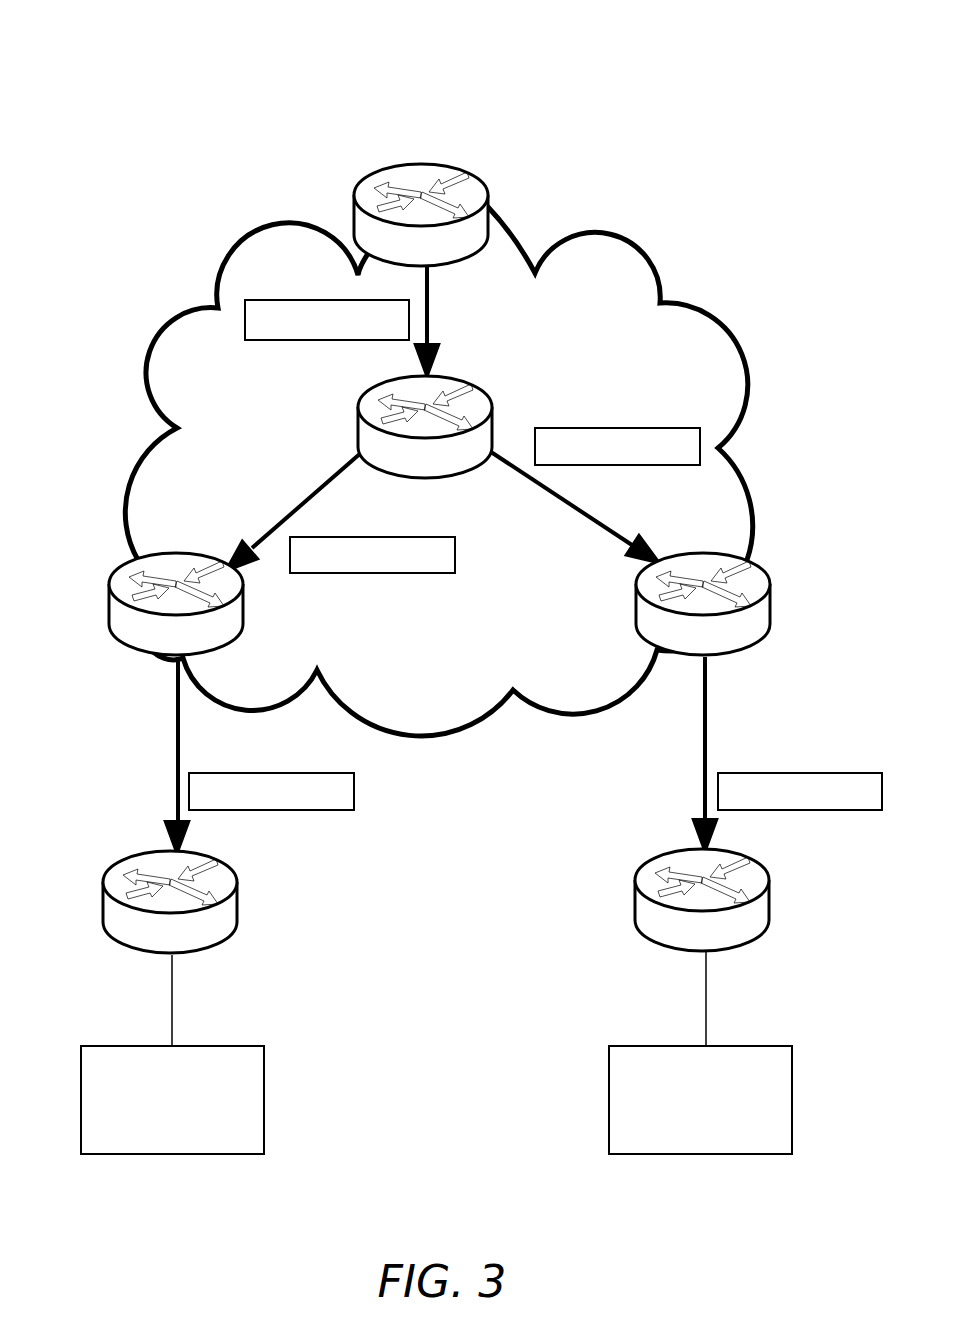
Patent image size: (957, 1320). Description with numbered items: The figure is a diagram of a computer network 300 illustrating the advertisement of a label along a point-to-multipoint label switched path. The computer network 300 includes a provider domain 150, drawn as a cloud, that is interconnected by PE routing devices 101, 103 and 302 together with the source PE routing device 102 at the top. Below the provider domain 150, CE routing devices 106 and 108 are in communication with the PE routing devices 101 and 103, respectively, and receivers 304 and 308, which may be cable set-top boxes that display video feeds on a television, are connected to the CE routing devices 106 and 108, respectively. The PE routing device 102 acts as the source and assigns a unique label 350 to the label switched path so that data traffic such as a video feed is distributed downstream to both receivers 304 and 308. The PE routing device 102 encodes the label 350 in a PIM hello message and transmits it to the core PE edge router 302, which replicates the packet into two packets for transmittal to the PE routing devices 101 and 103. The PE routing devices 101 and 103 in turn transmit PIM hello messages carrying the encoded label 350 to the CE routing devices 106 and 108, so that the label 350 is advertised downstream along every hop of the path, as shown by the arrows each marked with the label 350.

The computer network 300 is at (686, 61).
The provider domain 150 is at (395, 621).
The label 350 is at (535, 555).
The PE routing device 102 is at (412, 166).
The core PE edge router 302 is at (483, 392).
The PE routing device 101 is at (110, 608).
The PE routing device 103 is at (772, 613).
The CE routing device 106 is at (237, 900).
The CE routing device 108 is at (768, 897).
The receiver 304 is at (152, 1128).
The receiver 308 is at (680, 1128).